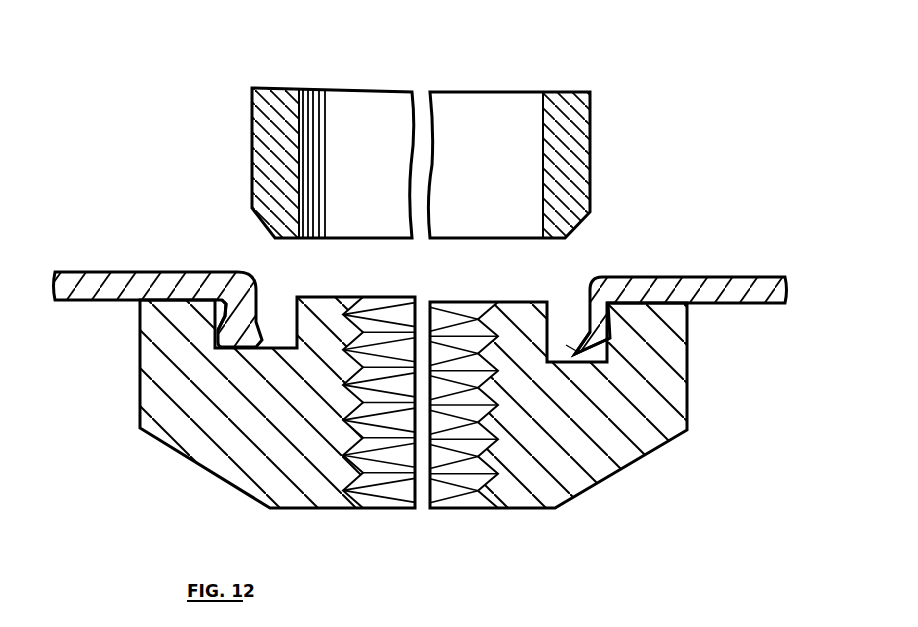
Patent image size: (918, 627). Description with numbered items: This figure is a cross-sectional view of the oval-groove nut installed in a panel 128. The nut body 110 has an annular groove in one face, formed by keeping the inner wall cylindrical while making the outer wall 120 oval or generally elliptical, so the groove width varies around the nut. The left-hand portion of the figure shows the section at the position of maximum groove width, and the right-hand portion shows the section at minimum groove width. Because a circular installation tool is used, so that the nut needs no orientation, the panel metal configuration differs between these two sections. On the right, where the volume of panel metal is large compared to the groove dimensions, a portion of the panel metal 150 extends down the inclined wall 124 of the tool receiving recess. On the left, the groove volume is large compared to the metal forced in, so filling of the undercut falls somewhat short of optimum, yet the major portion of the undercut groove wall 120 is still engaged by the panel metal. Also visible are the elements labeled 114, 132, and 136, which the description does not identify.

The nut body 110 is at (182, 455).
The first flange 114 is at (178, 298).
The outer wall 120 is at (224, 304).
The inclined wall 124 is at (583, 356).
The panel 128 is at (736, 284).
The nut 132 is at (265, 225).
The thread 136 is at (312, 154).
The panel metal 150 is at (563, 352).